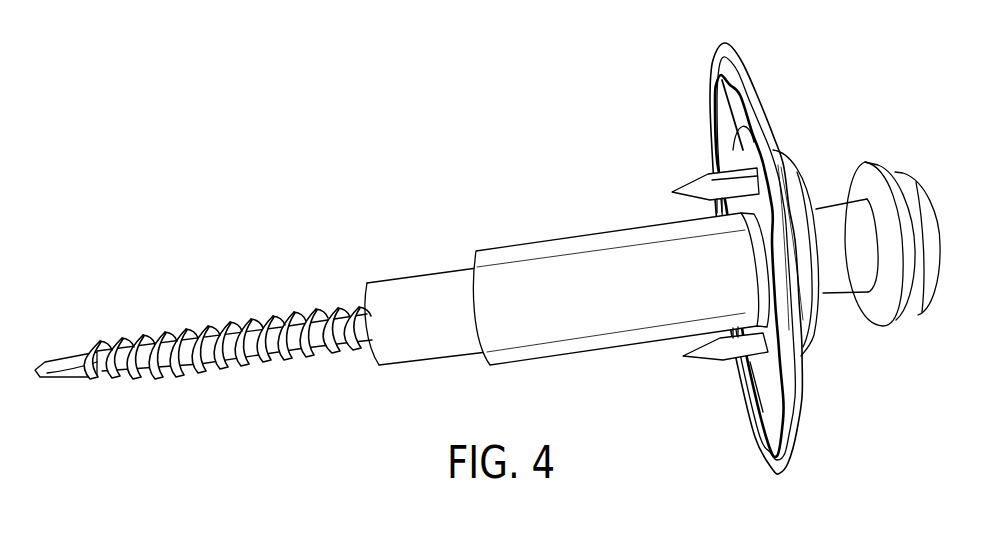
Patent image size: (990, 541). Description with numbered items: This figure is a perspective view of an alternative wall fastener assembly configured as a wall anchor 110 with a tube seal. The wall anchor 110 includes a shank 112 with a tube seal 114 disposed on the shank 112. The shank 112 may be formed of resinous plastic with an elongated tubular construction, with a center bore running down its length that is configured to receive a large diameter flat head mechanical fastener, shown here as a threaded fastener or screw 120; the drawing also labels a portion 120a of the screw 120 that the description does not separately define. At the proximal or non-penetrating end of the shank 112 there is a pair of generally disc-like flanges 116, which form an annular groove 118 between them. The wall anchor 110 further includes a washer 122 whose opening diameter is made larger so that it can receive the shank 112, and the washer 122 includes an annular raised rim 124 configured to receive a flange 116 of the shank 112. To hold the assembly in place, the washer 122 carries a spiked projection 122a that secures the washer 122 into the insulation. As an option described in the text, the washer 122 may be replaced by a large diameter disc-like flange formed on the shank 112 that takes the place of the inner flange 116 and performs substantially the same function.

The wall anchor 110 is at (340, 133).
The shank 112 is at (433, 292).
The tube seal 114 is at (592, 232).
The disc-like flange 116 is at (887, 168).
The annular groove 118 is at (852, 347).
The screw 120 is at (245, 331).
The head cap 120a is at (922, 224).
The washer 122 is at (740, 74).
The spiked projection 122a is at (702, 190).
The annular raised rim 124 is at (798, 173).